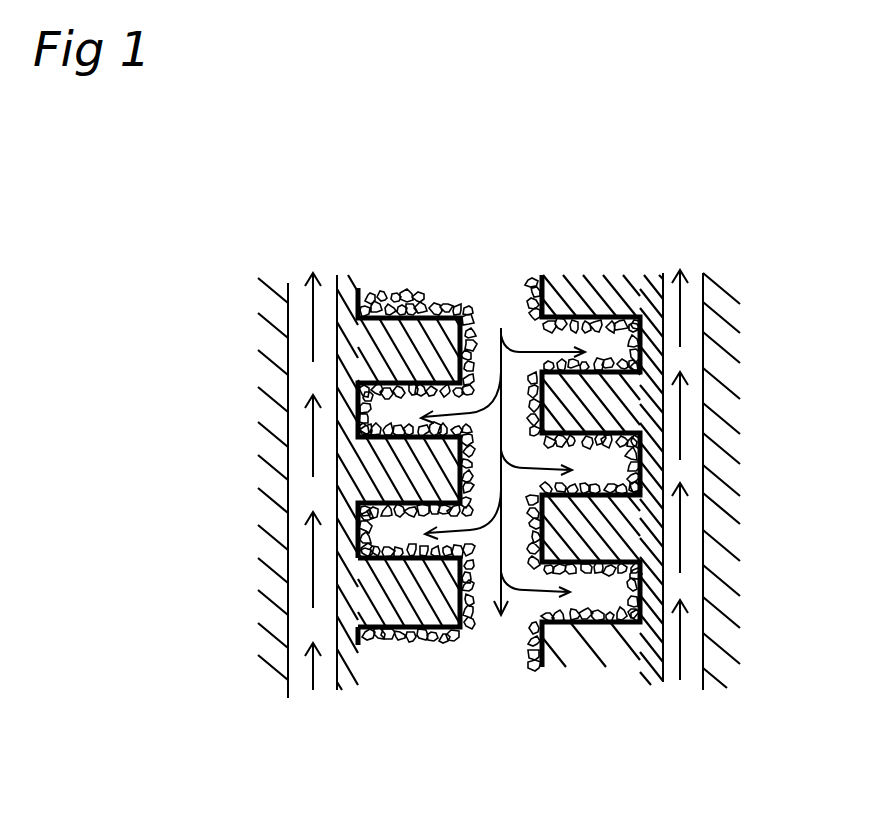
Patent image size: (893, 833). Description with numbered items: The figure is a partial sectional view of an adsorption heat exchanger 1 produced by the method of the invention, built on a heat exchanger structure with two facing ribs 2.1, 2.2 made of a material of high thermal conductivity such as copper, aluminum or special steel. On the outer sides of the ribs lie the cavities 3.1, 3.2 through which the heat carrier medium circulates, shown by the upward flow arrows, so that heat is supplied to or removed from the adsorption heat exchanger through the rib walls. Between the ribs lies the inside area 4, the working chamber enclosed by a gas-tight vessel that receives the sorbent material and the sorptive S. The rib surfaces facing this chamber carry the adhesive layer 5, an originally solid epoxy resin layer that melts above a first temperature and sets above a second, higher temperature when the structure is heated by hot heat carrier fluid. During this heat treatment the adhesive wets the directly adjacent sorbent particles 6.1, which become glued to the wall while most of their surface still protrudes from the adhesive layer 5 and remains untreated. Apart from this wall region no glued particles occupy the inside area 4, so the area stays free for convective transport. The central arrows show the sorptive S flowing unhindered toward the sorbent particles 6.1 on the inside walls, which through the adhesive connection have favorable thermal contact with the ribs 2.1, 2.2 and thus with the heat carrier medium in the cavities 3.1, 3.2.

The heat exchanger 1 is at (532, 780).
The rib 2.1 is at (400, 340).
The rib 2.2 is at (590, 288).
The cavity 3.1 is at (305, 272).
The cavity 3.2 is at (692, 282).
The inside area 4 is at (524, 432).
The adhesive layer 5 is at (400, 637).
The sorbent particles 6.1 is at (455, 640).
The sorptive S is at (503, 447).